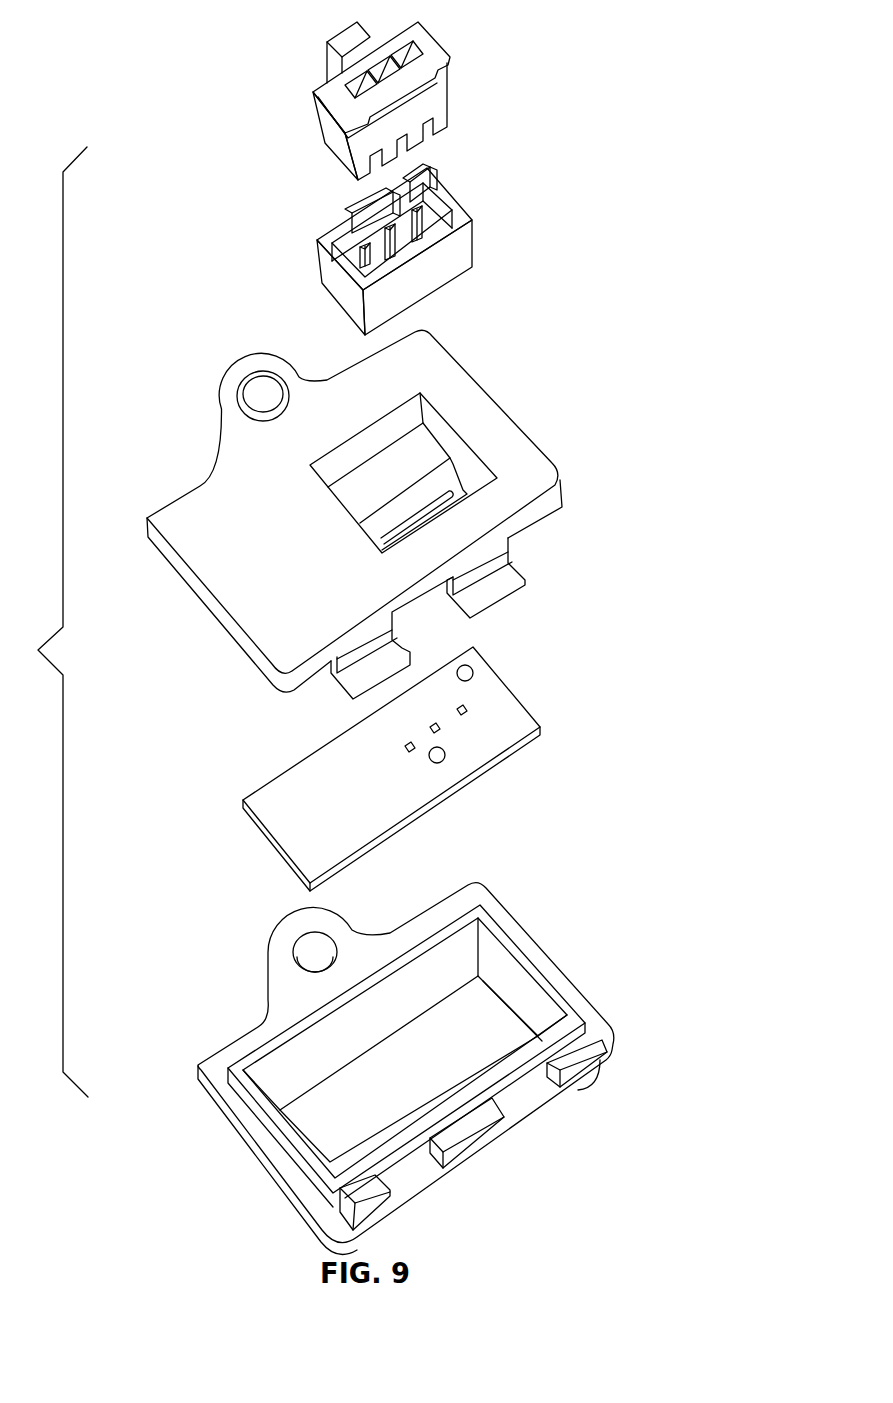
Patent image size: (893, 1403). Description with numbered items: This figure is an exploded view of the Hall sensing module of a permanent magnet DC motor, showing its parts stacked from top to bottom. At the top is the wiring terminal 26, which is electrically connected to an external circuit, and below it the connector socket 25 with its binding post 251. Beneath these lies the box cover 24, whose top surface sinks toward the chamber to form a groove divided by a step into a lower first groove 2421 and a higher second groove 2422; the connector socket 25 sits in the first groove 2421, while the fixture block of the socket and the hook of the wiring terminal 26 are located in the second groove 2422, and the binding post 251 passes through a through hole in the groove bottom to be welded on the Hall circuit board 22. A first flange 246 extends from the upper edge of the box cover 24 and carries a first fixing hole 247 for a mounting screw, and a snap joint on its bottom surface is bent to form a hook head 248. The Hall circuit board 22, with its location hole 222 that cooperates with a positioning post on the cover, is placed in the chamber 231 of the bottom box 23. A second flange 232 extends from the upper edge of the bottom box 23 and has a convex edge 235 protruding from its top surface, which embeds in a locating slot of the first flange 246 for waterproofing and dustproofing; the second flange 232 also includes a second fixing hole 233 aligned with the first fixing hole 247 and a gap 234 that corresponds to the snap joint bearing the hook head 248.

The wiring terminal 26 is at (432, 97).
The connector socket 25 is at (383, 249).
The binding post 251 is at (343, 227).
The box cover 24 is at (375, 514).
The first flange 246 is at (217, 607).
The first fixing hole 247 is at (260, 408).
The second groove 2422 is at (417, 447).
The first groove 2421 is at (457, 487).
The hook head 248 is at (528, 584).
The Hall circuit board 22 is at (434, 769).
The location hole 222 is at (443, 757).
The bottom box 23 is at (408, 1053).
The chamber 231 is at (283, 1077).
The second flange 232 is at (583, 1010).
The second fixing hole 233 is at (310, 957).
The gap 234 is at (533, 1090).
The convex edge 235 is at (543, 983).